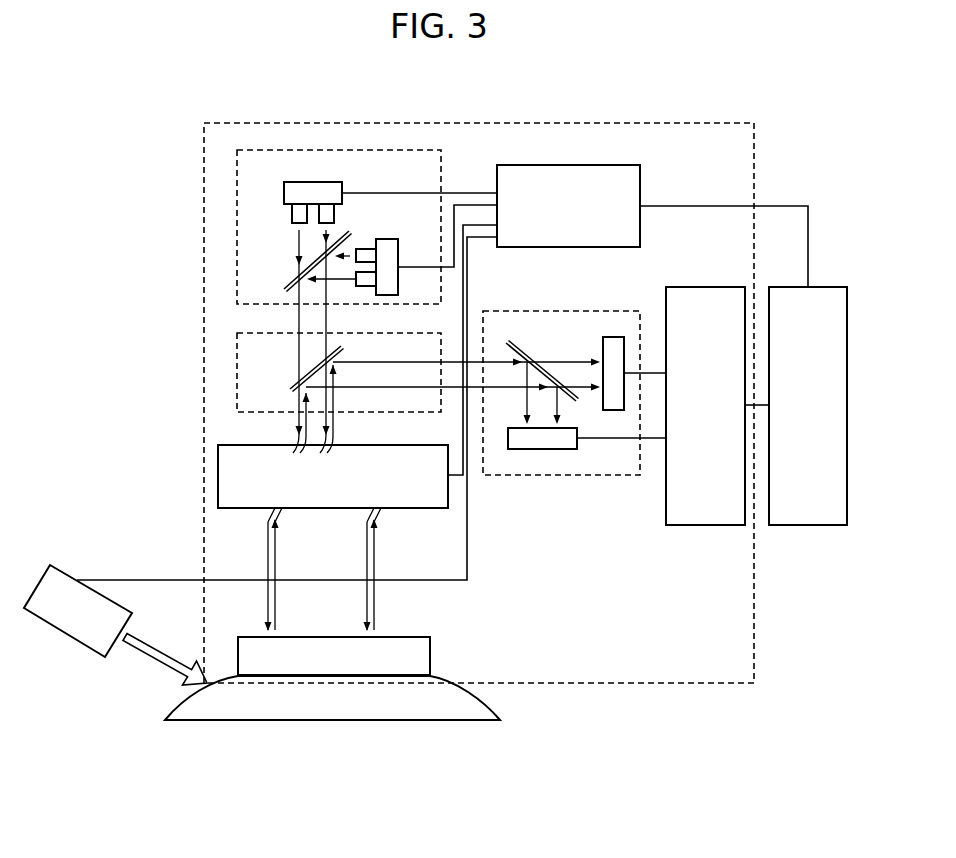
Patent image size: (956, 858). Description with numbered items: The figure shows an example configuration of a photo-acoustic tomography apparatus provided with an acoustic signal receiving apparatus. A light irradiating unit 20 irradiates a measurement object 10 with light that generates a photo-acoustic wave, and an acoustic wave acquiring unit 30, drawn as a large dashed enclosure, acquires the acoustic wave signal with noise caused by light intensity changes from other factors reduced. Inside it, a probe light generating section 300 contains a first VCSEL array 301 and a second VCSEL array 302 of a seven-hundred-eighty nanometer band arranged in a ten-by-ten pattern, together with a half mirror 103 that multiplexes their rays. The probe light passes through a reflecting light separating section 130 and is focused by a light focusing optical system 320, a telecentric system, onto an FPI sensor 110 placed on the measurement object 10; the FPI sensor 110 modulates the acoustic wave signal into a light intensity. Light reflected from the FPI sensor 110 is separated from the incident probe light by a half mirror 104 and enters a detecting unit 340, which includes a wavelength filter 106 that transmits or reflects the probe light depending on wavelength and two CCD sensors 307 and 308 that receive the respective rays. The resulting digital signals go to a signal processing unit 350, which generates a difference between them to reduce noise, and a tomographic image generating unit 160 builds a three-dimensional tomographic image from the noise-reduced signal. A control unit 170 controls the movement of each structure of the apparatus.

The measurement object 10 is at (470, 706).
The light irradiating unit 20 is at (47, 613).
The acoustic wave acquiring unit 30 is at (243, 122).
The half mirror 103 is at (352, 233).
The half mirror 104 is at (344, 348).
The wavelength filter 106 is at (533, 357).
The FPI sensor 110 is at (420, 656).
The reflecting light separating section 130 is at (277, 333).
The tomographic image generating unit 160 is at (830, 287).
The control unit 170 is at (640, 176).
The probe light generating section 300 is at (272, 150).
The VCSEL array 301 is at (298, 188).
The VCSEL array 302 is at (388, 240).
The CCD sensor 307 is at (609, 337).
The CCD sensor 308 is at (550, 446).
The light focusing optical system 320 is at (277, 445).
The detecting unit 340 is at (518, 310).
The signal processing unit 350 is at (722, 287).